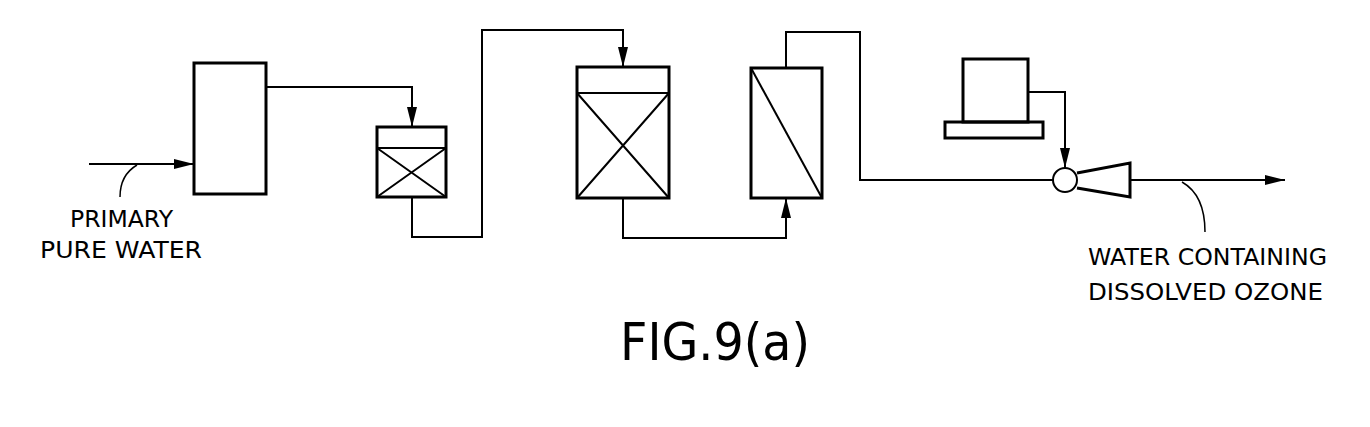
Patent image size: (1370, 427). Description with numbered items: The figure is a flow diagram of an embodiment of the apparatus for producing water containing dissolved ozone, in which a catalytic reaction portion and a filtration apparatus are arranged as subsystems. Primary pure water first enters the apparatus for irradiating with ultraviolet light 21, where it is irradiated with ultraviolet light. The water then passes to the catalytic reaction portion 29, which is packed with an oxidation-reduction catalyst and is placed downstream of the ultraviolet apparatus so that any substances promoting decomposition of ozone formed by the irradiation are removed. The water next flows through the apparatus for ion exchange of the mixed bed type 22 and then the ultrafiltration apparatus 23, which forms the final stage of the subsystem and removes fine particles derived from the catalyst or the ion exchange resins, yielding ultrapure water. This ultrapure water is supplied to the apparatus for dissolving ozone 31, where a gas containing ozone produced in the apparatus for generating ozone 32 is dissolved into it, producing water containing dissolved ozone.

The apparatus for irradiating with ultraviolet light 21 is at (210, 105).
The catalytic reaction portion 29 is at (388, 173).
The apparatus for ion exchange of the mixed bed type 22 is at (587, 147).
The ultrafiltration apparatus 23 is at (760, 140).
The apparatus for generating ozone 32 is at (972, 95).
The apparatus for dissolving ozone 31 is at (1105, 177).